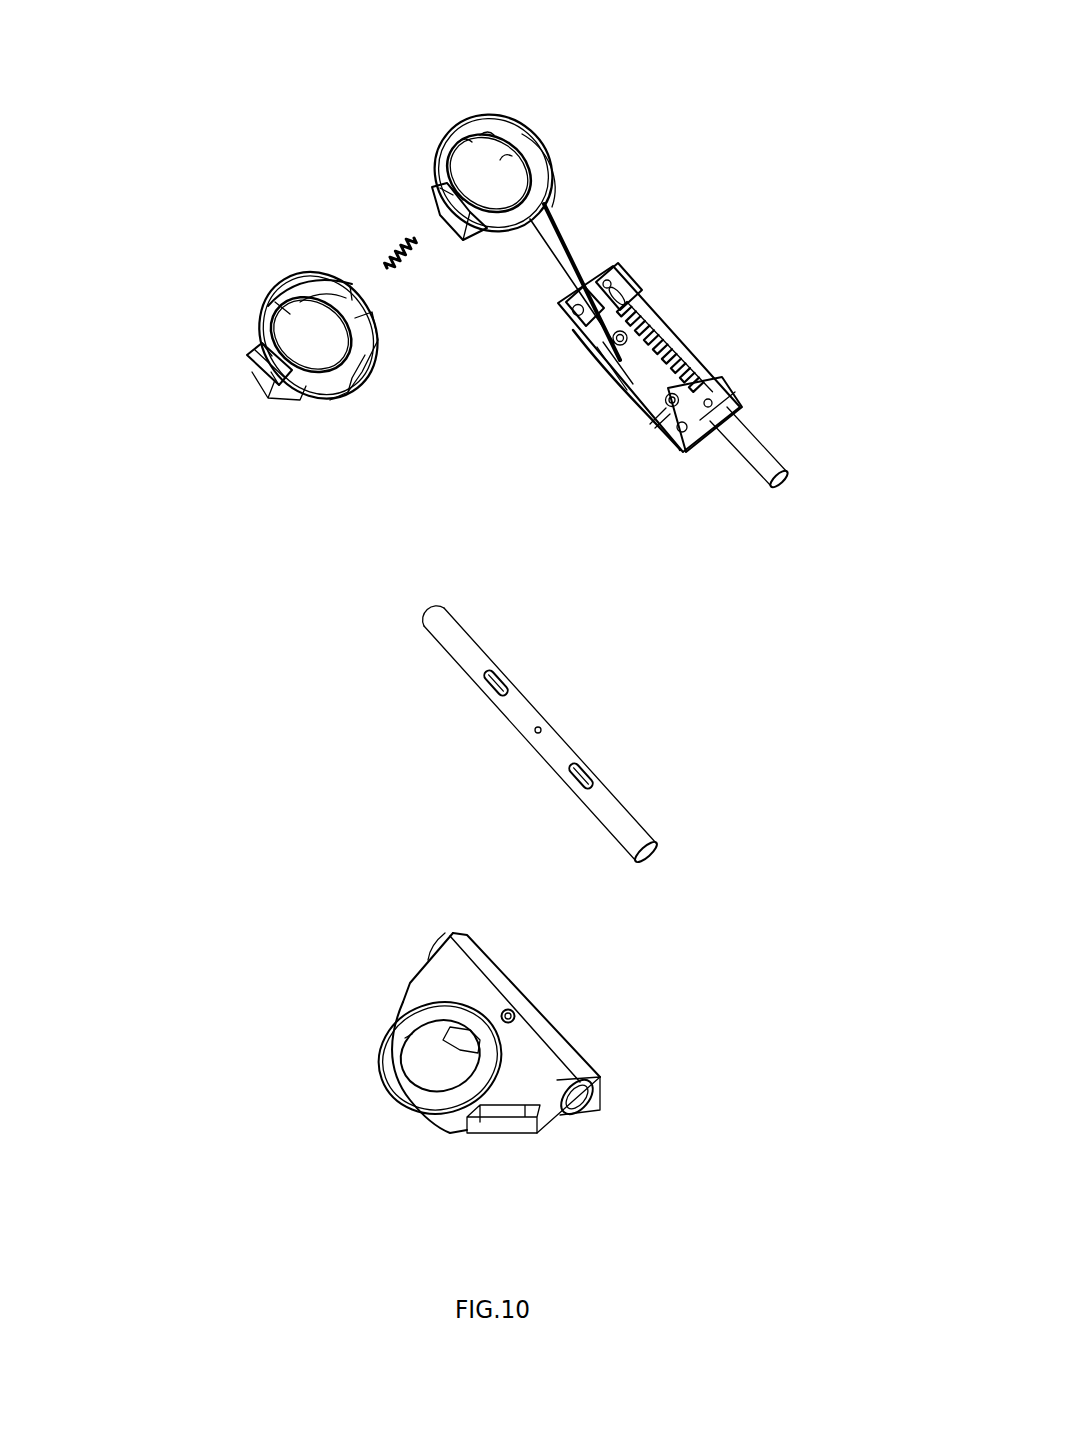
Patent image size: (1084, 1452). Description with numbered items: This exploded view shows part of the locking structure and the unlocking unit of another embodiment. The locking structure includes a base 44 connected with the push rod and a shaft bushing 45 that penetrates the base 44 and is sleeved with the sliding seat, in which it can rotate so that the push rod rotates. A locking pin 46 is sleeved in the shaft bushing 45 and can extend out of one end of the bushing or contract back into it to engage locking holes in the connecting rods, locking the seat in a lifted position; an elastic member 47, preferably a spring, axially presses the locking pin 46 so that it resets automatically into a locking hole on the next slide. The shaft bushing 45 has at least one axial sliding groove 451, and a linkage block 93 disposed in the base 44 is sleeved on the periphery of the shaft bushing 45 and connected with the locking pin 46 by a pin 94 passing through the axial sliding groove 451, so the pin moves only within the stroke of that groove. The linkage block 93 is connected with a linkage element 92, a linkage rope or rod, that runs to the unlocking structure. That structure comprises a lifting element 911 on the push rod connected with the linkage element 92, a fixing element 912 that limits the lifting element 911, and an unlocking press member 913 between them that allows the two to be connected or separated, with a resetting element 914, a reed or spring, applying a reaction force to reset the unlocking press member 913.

The base 44 is at (520, 1038).
The shaft bushing 45 is at (468, 660).
The axial sliding groove 451 is at (497, 690).
The locking pin 46 is at (757, 453).
The elastic member 47 is at (680, 350).
The linkage element 92 is at (580, 275).
The linkage block 93 is at (665, 410).
The pin 94 is at (618, 275).
The lifting element 911 is at (434, 186).
The fixing element 912 is at (302, 393).
The unlocking press member 913 is at (257, 365).
The resetting element 914 is at (383, 241).